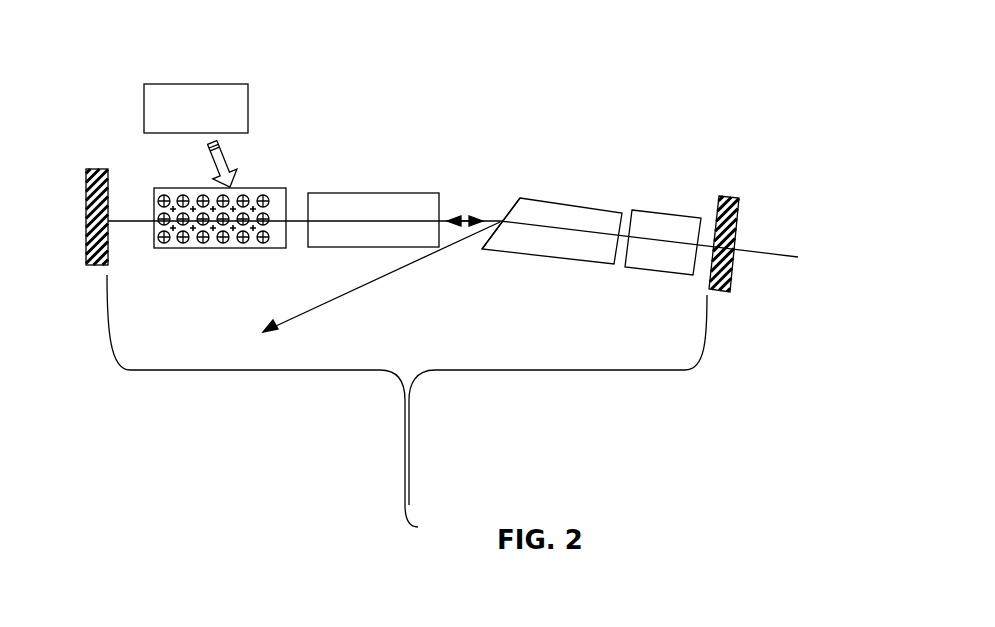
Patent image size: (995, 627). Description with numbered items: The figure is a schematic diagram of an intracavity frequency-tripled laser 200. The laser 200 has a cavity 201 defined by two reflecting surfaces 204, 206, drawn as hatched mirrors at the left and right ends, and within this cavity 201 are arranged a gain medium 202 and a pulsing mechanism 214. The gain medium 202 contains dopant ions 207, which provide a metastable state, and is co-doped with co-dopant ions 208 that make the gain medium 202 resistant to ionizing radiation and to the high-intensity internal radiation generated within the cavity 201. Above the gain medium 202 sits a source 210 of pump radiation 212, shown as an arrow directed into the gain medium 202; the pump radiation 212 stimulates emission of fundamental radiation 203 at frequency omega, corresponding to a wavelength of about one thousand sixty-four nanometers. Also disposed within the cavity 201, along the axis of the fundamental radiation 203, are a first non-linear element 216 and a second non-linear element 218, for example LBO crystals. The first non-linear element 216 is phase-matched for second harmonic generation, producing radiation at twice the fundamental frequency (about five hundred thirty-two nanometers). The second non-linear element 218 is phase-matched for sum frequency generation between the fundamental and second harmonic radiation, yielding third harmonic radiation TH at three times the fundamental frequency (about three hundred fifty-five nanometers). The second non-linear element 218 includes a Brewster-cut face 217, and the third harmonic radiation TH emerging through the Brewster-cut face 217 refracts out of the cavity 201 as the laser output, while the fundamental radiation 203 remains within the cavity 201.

The intracavity frequency-tripled laser 200 is at (743, 27).
The cavity 201 is at (418, 527).
The gain medium 202 is at (218, 258).
The fundamental radiation 203 is at (473, 217).
The reflecting surface 204 is at (110, 183).
The reflecting surface 206 is at (712, 222).
The dopant ions 207 is at (258, 248).
The co-dopant ions 208 is at (213, 248).
The source of pump radiation 210 is at (237, 84).
The pump radiation 212 is at (226, 160).
The pulsing mechanism 214 is at (358, 193).
The first non-linear element 216 is at (653, 265).
The Brewster-cut face 217 is at (484, 248).
The second non-linear element 218 is at (539, 270).
The third harmonic radiation TH is at (372, 283).